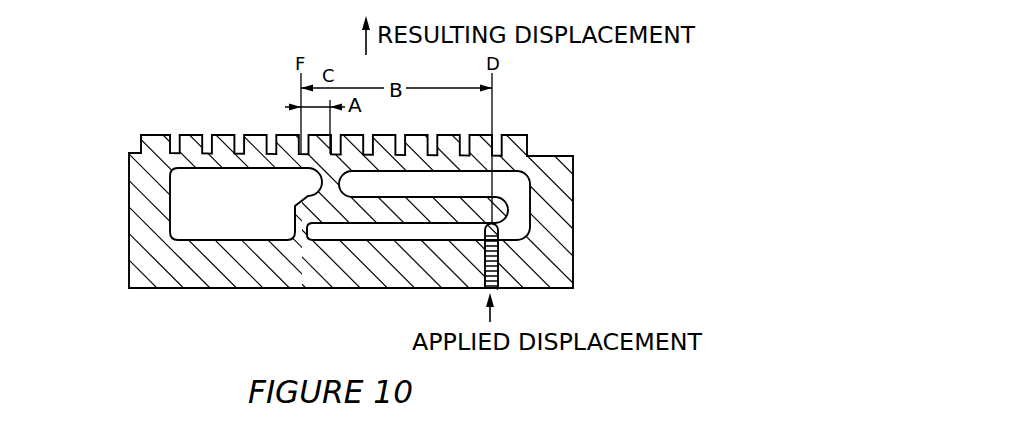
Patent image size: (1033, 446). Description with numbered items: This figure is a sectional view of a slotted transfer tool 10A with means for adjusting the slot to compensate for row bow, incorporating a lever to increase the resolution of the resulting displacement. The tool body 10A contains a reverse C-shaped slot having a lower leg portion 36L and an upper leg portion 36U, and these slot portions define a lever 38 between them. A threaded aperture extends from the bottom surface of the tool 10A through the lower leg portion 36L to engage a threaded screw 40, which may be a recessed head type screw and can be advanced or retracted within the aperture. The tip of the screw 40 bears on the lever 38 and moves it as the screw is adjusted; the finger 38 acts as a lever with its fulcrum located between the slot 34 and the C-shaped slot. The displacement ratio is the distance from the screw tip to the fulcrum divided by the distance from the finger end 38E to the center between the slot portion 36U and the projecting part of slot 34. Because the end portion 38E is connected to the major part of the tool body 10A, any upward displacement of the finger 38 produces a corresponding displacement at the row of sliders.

The tool 10A is at (128, 237).
The slot 34 is at (202, 232).
The upper leg portion 36U is at (426, 181).
The lower leg portion 36L is at (400, 233).
The lever 38 is at (341, 210).
The finger end 38E is at (302, 245).
The threaded screw 40 is at (498, 263).